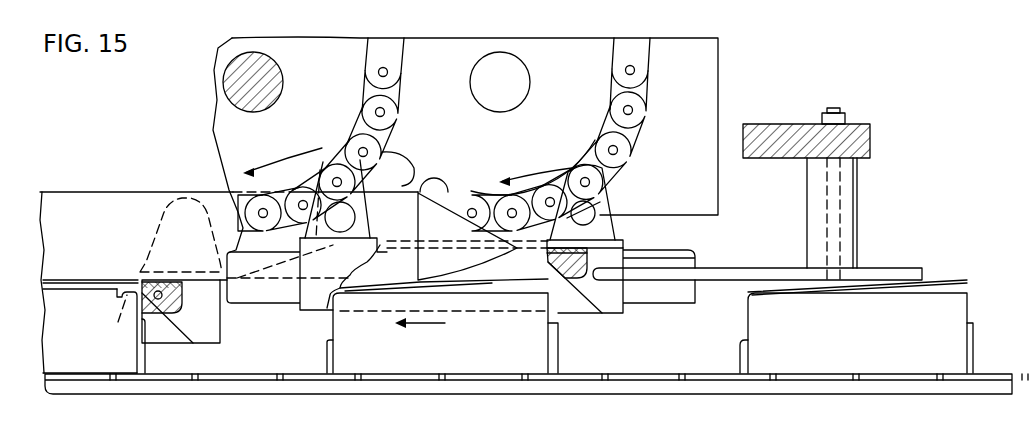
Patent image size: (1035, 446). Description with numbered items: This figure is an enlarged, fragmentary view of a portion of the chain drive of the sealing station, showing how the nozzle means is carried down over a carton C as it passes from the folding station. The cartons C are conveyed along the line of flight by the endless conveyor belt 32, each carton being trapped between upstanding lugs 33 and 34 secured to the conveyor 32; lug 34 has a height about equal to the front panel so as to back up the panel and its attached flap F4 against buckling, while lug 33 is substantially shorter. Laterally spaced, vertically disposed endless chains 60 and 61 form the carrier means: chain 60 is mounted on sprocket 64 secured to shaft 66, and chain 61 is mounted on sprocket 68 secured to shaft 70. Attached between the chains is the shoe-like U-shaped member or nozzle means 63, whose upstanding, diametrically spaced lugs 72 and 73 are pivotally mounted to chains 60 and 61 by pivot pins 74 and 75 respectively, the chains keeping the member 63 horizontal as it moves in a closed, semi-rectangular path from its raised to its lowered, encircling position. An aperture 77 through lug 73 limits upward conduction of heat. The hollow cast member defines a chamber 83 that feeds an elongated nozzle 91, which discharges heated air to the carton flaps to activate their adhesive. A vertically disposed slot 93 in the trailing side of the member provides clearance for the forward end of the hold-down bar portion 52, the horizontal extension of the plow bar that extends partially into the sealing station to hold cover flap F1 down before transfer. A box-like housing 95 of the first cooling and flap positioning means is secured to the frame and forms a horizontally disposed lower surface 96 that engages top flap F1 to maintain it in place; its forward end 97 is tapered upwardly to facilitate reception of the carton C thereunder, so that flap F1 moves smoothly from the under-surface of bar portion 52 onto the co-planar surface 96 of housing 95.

The endless conveyor belt 32 is at (983, 380).
The upstanding lug 33 is at (973, 332).
The upstanding lug 34 is at (740, 345).
The horizontally disposed extension 52 is at (722, 272).
The endless chain 60 is at (638, 127).
The endless chain 61 is at (390, 122).
The U-shaped member or nozzle means 63 is at (625, 316).
The sprocket 64 is at (478, 139).
The shaft 66 is at (500, 103).
The sprocket 68 is at (228, 130).
The shaft 70 is at (224, 85).
The upstanding lug 72 is at (602, 197).
The upstanding lug 73 is at (312, 190).
The pivot pin 74 is at (578, 175).
The pivot pin 75 is at (335, 177).
The aperture 77 is at (593, 215).
The chamber 83 is at (160, 282).
The elongated nozzle 91 is at (120, 295).
The vertically disposed slot 93 is at (597, 262).
The box-like housing 95 is at (107, 249).
The horizontally disposed lower surface 96 is at (368, 287).
The forward end of the housing 97 is at (492, 262).
The cover flap F1 is at (93, 285).
The flap F4 is at (117, 318).
The carton C is at (434, 355).